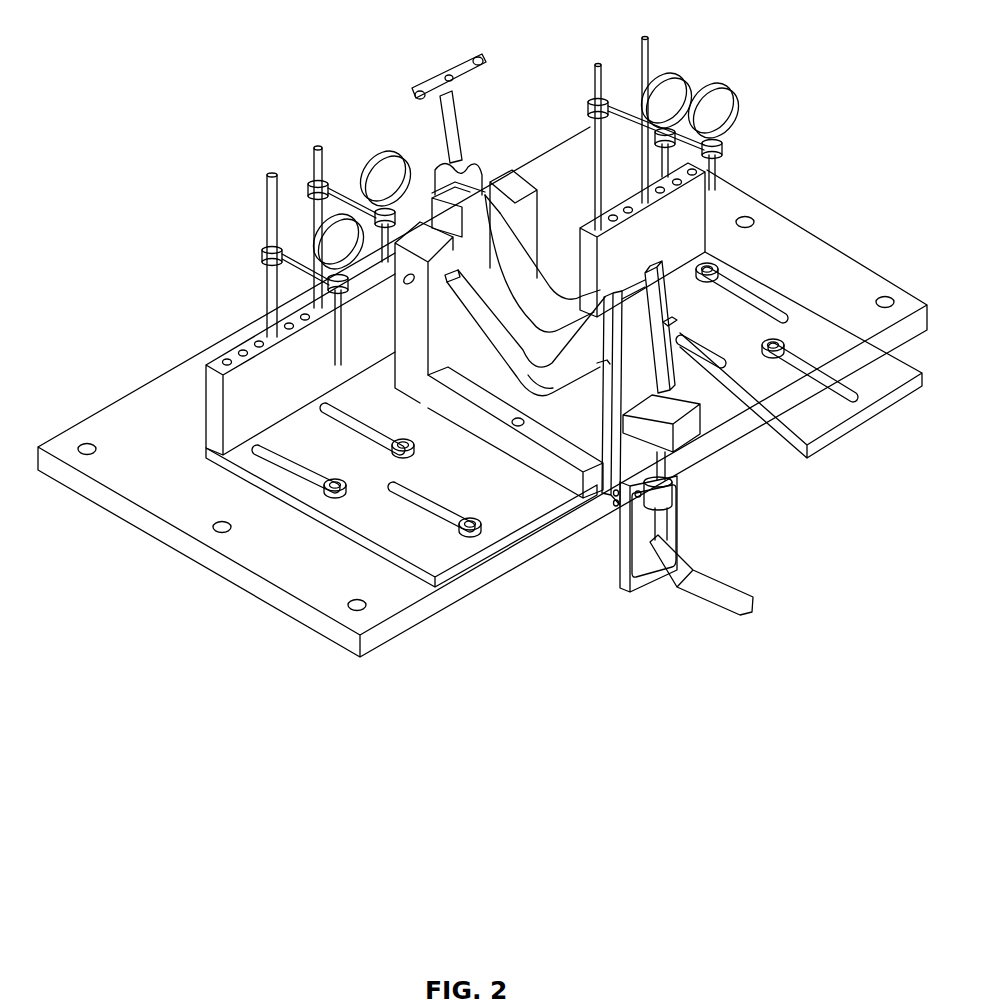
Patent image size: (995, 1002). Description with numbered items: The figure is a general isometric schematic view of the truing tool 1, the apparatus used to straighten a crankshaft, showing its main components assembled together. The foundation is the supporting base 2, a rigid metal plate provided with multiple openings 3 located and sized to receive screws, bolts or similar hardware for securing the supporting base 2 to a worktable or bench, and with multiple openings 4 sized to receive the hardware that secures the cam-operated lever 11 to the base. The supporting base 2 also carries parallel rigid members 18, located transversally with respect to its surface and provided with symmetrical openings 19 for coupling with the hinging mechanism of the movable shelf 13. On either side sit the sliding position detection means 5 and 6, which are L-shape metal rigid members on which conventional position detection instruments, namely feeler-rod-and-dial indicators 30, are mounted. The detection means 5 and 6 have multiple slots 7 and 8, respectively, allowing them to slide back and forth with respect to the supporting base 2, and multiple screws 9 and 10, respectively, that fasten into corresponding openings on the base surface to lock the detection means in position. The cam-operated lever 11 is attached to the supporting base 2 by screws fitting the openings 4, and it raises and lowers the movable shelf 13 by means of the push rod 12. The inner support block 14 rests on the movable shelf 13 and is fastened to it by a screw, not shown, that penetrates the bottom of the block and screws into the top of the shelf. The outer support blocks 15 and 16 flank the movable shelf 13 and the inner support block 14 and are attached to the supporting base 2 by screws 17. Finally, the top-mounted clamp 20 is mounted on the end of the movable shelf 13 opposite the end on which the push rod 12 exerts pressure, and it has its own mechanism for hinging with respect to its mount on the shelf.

The truing tool 1 is at (793, 218).
The supporting base 2 is at (152, 533).
The openings 3 is at (98, 450).
The openings 4 is at (603, 508).
The sliding position detection means 5 is at (306, 431).
The sliding position detection means 6 is at (693, 243).
The slots 7 is at (398, 489).
The slots 8 is at (742, 303).
The screws 9 is at (345, 494).
The screws 10 is at (696, 276).
The cam-operated lever 11 is at (645, 577).
The push rod 12 is at (663, 466).
The movable shelf 13 is at (683, 429).
The inner support block 14 is at (598, 345).
The outer support block 15 is at (467, 350).
The outer support block 16 is at (682, 323).
The screws 17 is at (525, 423).
The parallel rigid members 18 is at (422, 238).
The symmetrical openings 19 is at (404, 284).
The top-mounted clamp 20 is at (448, 54).
The feeler-rod-and-dial indicators 30 is at (340, 217).